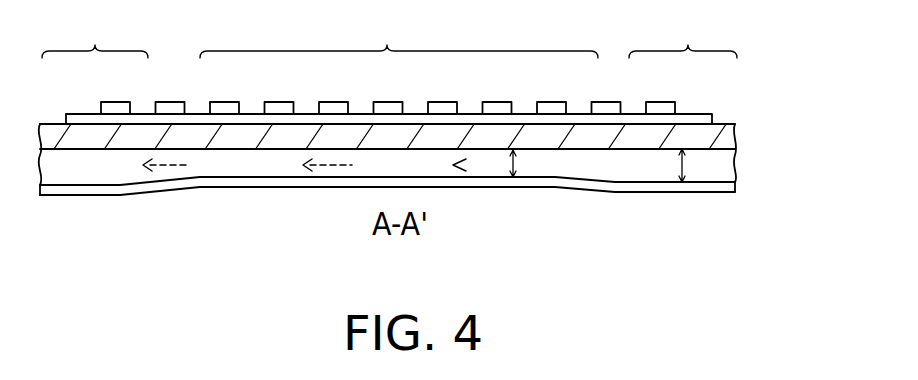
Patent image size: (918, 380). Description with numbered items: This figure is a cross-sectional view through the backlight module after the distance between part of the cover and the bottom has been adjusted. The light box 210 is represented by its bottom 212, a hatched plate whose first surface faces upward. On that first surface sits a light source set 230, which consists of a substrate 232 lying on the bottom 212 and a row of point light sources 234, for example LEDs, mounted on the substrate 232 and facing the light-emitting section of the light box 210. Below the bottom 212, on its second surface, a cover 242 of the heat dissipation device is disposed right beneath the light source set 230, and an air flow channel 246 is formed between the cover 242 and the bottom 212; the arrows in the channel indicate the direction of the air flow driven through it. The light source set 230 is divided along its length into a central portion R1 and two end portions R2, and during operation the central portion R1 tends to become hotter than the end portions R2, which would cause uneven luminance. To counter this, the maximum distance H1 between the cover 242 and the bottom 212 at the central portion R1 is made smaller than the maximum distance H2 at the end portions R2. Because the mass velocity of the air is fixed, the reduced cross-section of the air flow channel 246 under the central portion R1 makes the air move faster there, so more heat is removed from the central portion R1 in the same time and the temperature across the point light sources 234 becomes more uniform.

The light box 210 is at (448, 151).
The bottom 212 is at (727, 141).
The light source set 230 is at (370, 197).
The substrate 232 is at (82, 120).
The point light sources 234 is at (108, 108).
The cover 242 is at (727, 187).
The air flow channel 246 is at (458, 165).
The maximum distance H1 is at (527, 163).
The maximum distance H2 is at (698, 166).
The central portion R1 is at (399, 33).
The end portions R2 is at (389, 33).